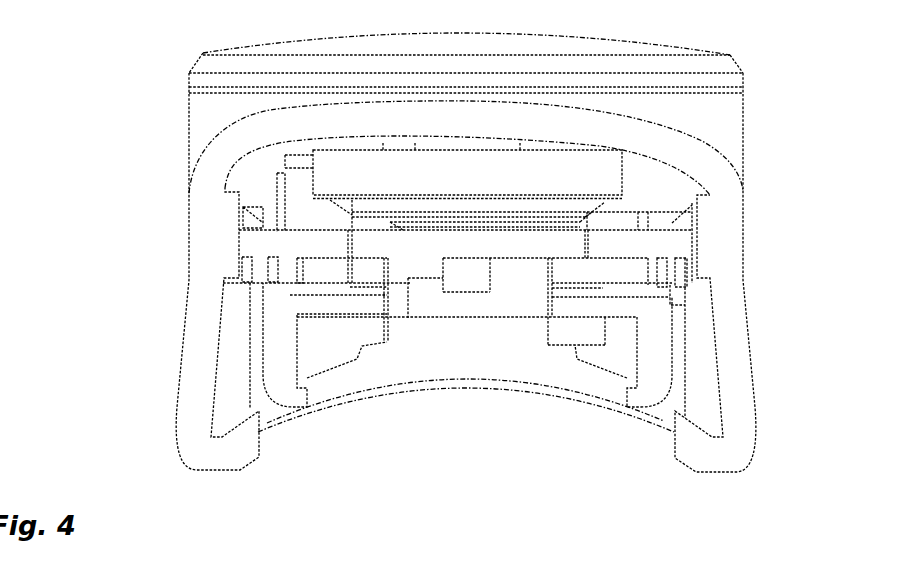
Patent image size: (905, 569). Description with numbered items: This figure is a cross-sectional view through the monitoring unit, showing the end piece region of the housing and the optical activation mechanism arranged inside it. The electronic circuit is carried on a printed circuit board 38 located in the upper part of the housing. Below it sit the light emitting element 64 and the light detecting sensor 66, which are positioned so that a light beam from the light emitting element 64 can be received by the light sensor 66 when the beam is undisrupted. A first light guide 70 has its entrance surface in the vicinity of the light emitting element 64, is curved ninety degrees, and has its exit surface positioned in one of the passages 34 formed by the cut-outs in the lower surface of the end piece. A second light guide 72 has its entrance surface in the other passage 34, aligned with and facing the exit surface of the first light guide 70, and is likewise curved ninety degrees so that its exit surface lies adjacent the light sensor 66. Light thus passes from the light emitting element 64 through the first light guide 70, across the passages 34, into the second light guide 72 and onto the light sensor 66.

The passages 34 is at (268, 424).
The printed circuit board 38 is at (303, 243).
The light emitting element 64 is at (252, 268).
The light detecting sensor 66 is at (662, 277).
The first light guide 70 is at (267, 370).
The second light guide 72 is at (662, 358).